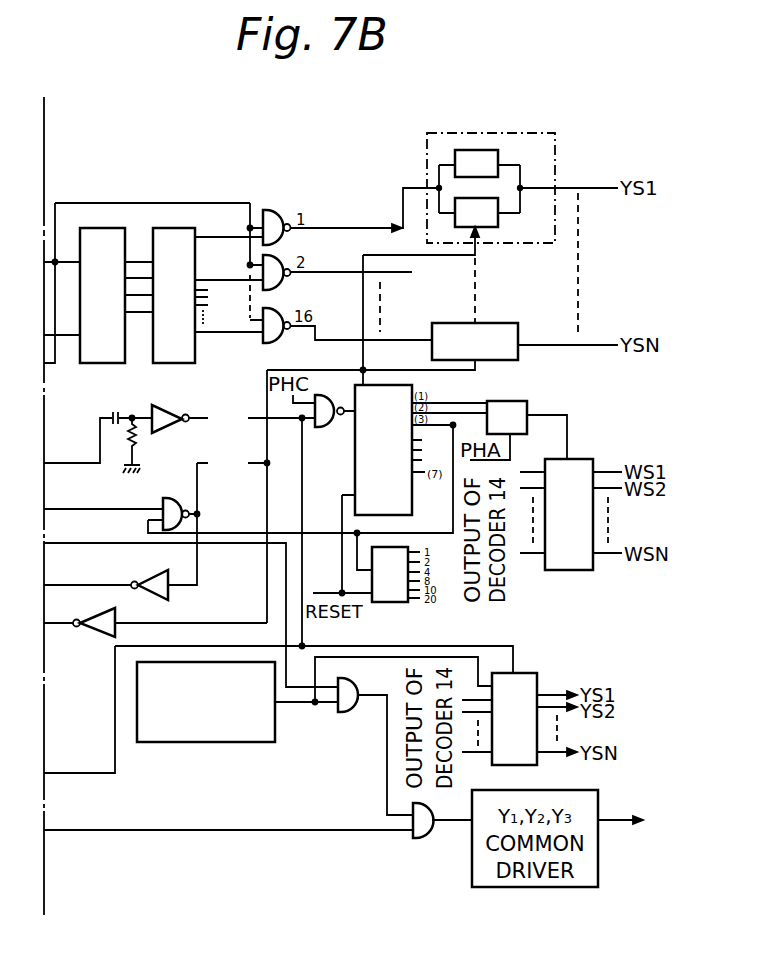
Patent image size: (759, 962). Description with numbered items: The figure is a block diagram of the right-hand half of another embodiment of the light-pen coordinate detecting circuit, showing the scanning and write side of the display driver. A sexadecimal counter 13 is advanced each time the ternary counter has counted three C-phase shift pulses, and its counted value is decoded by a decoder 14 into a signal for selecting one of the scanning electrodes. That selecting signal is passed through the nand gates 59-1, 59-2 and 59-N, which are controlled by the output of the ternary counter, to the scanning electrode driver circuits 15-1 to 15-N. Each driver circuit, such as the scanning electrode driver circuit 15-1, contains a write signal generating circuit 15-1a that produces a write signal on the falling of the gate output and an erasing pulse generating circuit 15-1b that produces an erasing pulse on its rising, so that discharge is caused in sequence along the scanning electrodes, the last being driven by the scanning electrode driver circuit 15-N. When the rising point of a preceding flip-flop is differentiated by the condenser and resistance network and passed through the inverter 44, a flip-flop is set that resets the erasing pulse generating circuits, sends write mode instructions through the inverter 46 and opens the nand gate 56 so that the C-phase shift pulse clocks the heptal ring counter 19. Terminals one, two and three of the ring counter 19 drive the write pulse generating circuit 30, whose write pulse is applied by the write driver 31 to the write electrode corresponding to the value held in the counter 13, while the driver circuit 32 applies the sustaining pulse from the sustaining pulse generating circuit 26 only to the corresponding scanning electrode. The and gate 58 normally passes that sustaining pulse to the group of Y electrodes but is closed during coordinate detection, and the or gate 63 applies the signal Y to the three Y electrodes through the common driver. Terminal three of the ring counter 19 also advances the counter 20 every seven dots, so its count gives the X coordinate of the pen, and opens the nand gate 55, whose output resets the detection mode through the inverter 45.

The sexadecimal counter 13 is at (100, 228).
The decoder 14 is at (175, 228).
The nand gate 59-1 is at (268, 212).
The nand gate 59-2 is at (280, 256).
The nand gate 59-N is at (274, 343).
The scanning electrode driver circuit 15-1 is at (522, 174).
The write signal generating circuit 15-1a is at (507, 158).
The erasing pulse generating circuit 15-1b is at (507, 220).
The scanning electrode driver circuit 15-N is at (525, 340).
The inverter 44 is at (172, 430).
The nand gate 55 is at (164, 504).
The inverter 45 is at (178, 595).
The inverter 46 is at (100, 634).
The nand gate 56 is at (326, 428).
The heptal ring counter 19 is at (355, 483).
The write pulse generating circuit 30 is at (507, 417).
The write driver 31 is at (569, 514).
The driver circuit 32 is at (514, 719).
The counter 20 is at (390, 574).
The sustaining pulse generating circuit 26 is at (200, 742).
The and gate 58 is at (346, 712).
The or gate 63 is at (421, 838).